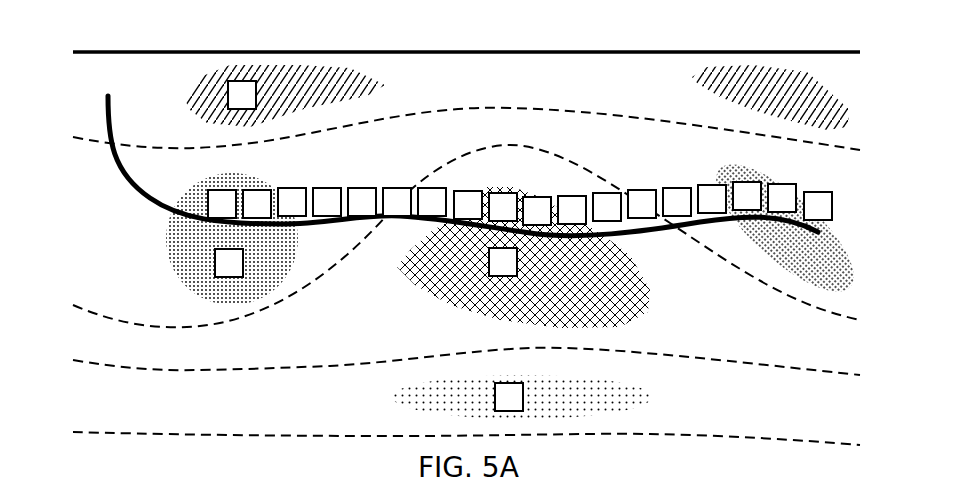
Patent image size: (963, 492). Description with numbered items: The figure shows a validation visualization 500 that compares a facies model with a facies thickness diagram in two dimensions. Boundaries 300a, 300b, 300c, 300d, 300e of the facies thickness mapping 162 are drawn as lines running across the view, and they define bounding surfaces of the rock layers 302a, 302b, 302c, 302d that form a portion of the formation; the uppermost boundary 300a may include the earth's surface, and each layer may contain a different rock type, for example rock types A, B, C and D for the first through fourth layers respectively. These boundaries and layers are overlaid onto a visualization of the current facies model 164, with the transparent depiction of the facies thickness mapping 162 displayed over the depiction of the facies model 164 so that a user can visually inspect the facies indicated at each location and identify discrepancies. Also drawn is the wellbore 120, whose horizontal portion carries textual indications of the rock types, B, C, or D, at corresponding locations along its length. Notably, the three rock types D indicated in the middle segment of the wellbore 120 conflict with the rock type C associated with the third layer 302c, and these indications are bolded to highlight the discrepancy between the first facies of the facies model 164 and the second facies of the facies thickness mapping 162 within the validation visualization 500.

The validation visualization 500 is at (840, 17).
The first boundary 300a is at (74, 44).
The first rock layer 302a is at (93, 84).
The second boundary 300b is at (75, 129).
The second rock layer 302b is at (93, 182).
The third boundary 300c is at (75, 299).
The third rock layer 302c is at (93, 329).
The fourth boundary 300d is at (75, 354).
The fourth rock layer 302d is at (93, 392).
The fifth boundary 300e is at (78, 424).
The wellbore 120 is at (140, 204).
The facies thickness mapping 162 is at (857, 90).
The facies model 164 is at (856, 186).